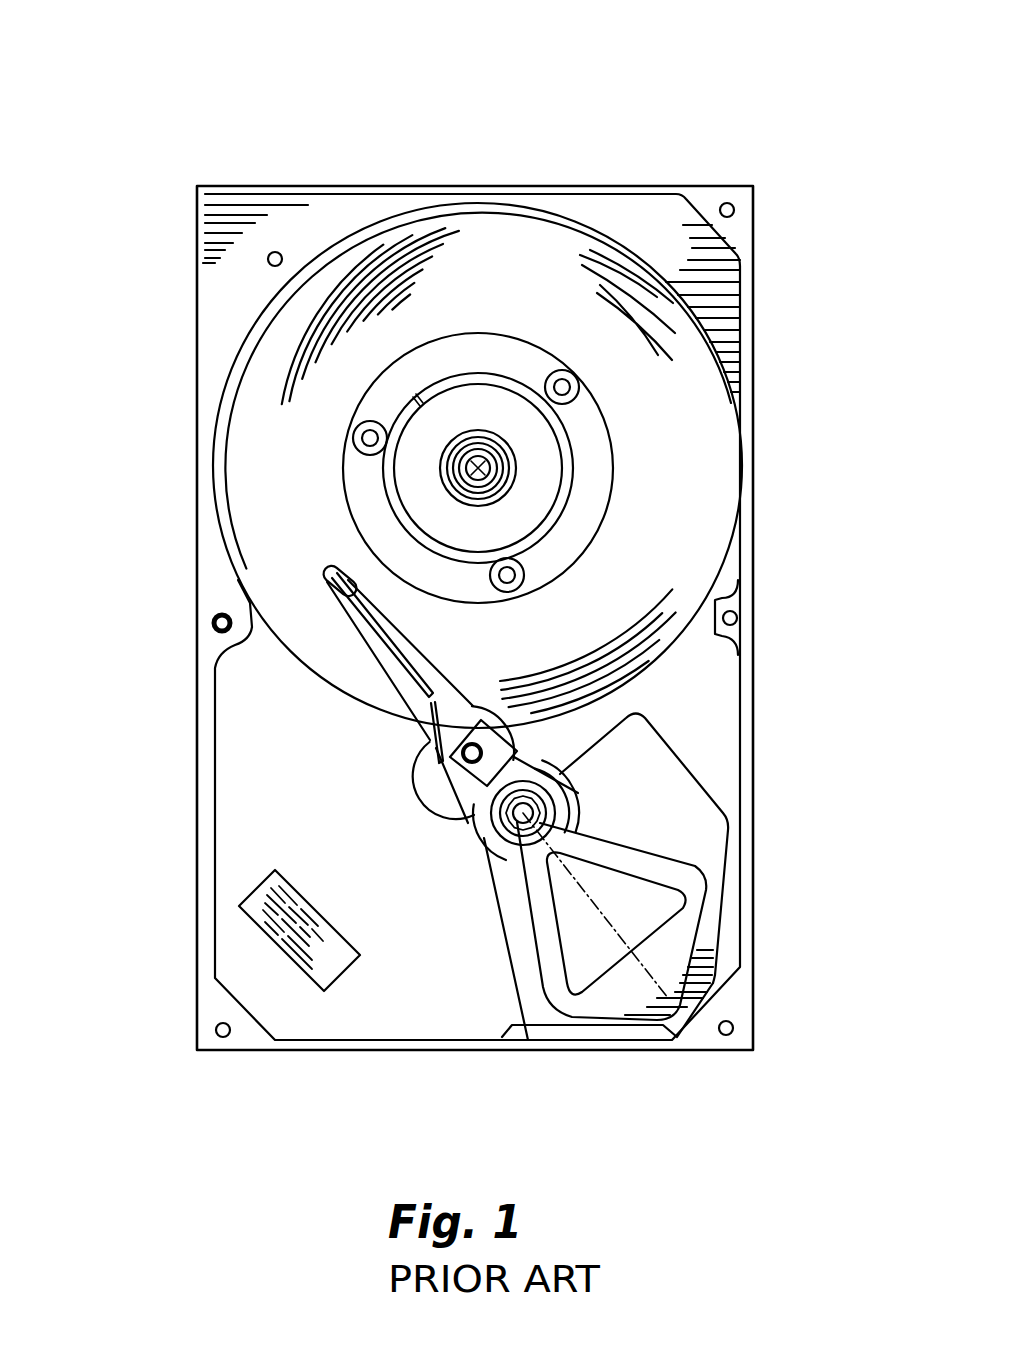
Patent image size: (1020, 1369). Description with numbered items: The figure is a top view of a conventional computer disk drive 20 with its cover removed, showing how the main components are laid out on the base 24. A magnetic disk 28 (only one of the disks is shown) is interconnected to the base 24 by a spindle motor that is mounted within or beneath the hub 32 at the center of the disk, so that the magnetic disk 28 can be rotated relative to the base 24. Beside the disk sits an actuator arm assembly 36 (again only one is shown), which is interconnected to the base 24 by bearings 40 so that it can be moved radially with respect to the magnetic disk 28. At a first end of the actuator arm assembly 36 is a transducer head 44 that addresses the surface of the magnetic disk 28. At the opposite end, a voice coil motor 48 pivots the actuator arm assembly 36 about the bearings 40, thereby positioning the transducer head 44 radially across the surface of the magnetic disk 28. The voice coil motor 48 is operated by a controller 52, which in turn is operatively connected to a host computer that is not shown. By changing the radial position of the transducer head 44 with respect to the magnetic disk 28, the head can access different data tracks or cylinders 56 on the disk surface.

The disk drive 20 is at (527, 80).
The base 24 is at (703, 698).
The magnetic disks 28 is at (700, 517).
The hub 32 is at (427, 487).
The actuator arm assemblies 36 is at (380, 663).
The bearings 40 is at (522, 814).
The transducer heads 44 is at (330, 574).
The voice coil motor 48 is at (556, 985).
The controller 52 is at (270, 935).
The data tracks or cylinders 56 is at (688, 582).